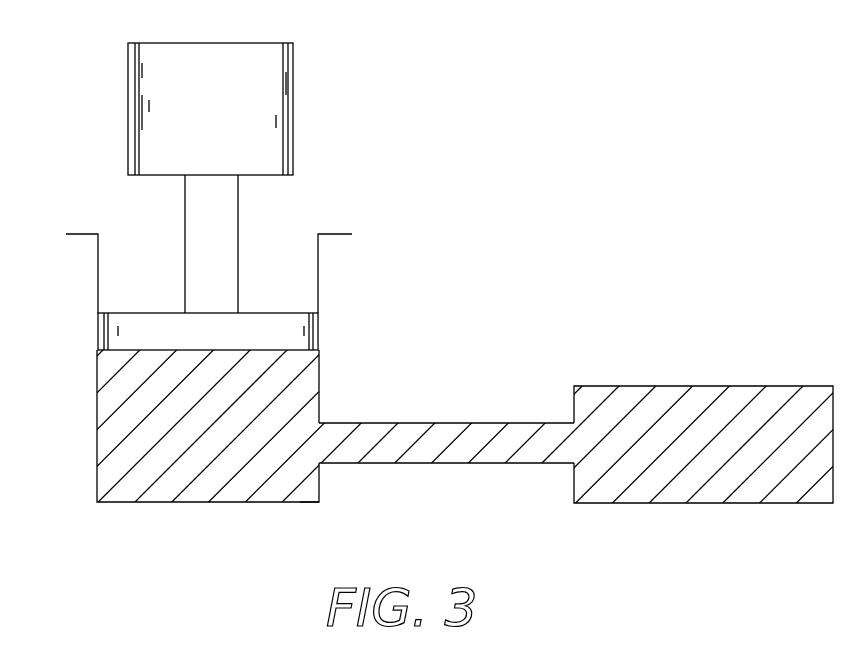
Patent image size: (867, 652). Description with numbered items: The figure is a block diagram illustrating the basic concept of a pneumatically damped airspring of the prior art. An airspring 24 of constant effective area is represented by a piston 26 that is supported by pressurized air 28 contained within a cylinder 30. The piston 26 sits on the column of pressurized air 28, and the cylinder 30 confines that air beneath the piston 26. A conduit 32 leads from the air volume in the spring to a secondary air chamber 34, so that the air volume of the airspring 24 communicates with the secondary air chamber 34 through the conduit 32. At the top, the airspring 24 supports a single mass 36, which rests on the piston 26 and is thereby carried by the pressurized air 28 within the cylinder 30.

The airspring 24 is at (86, 199).
The piston 26 is at (240, 241).
The pressurized air 28 is at (101, 448).
The cylinder 30 is at (303, 502).
The conduit 32 is at (421, 423).
The secondary air chamber 34 is at (640, 386).
The mass 36 is at (288, 80).